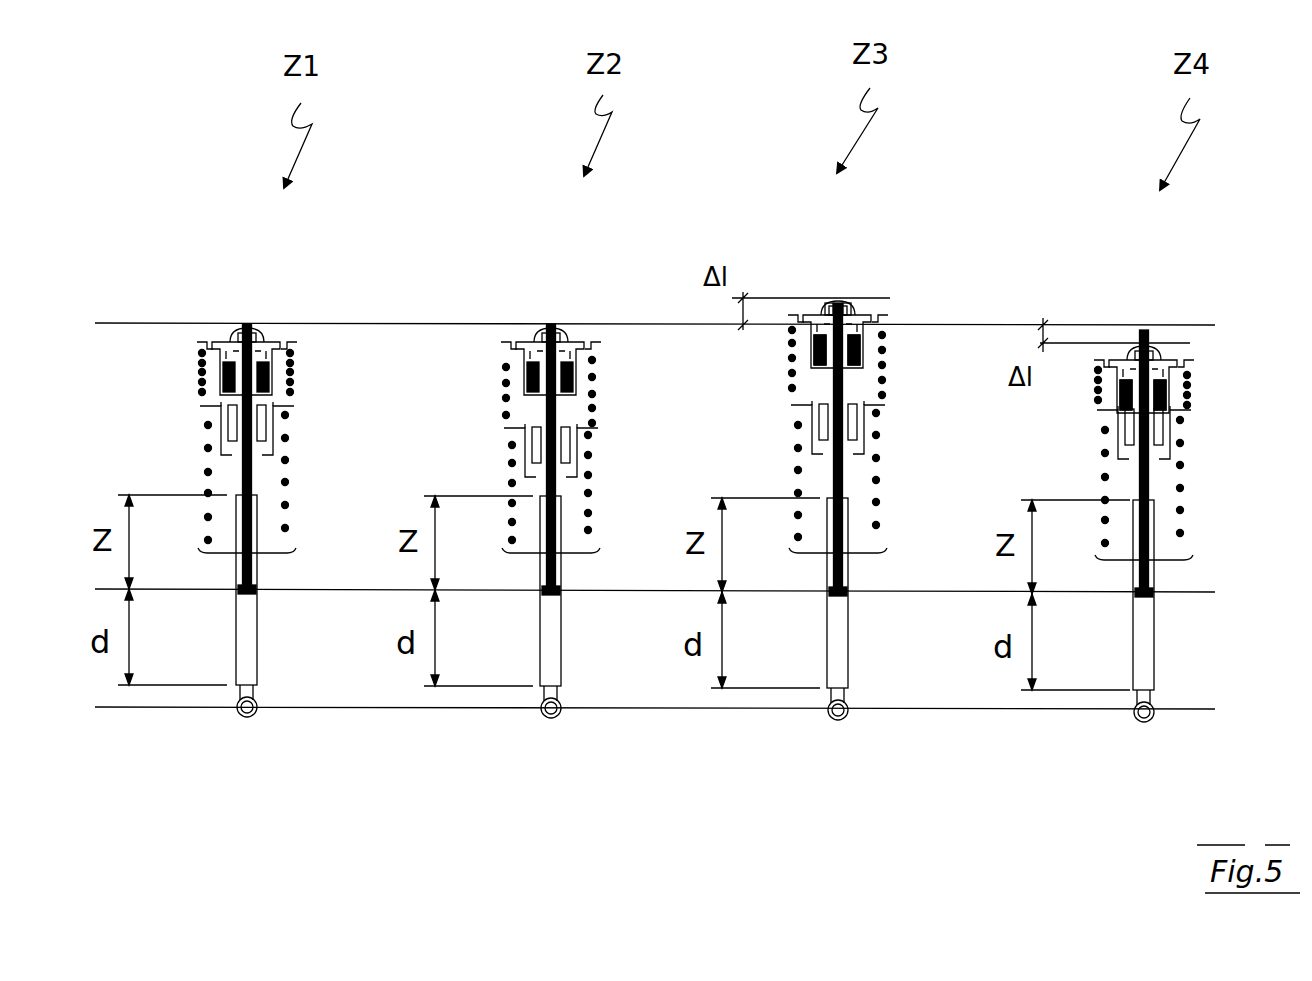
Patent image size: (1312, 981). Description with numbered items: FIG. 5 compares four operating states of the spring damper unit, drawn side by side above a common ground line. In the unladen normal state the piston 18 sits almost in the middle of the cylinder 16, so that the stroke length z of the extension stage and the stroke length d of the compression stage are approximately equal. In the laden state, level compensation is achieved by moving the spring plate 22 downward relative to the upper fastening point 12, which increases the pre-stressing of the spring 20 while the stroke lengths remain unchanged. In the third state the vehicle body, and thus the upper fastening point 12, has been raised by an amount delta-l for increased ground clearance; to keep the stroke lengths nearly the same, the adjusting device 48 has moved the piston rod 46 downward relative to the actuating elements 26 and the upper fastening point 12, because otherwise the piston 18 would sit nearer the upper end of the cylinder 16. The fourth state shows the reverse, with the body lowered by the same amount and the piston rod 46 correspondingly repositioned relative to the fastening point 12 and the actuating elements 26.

The upper fastening point 12 is at (573, 343).
The cylinder 16 is at (258, 656).
The piston 18 is at (256, 586).
The spring 20 is at (600, 490).
The spring plate 22 is at (598, 430).
The actuating elements 26 is at (878, 352).
The piston rod 46 is at (838, 472).
The adjusting device 48 is at (814, 315).